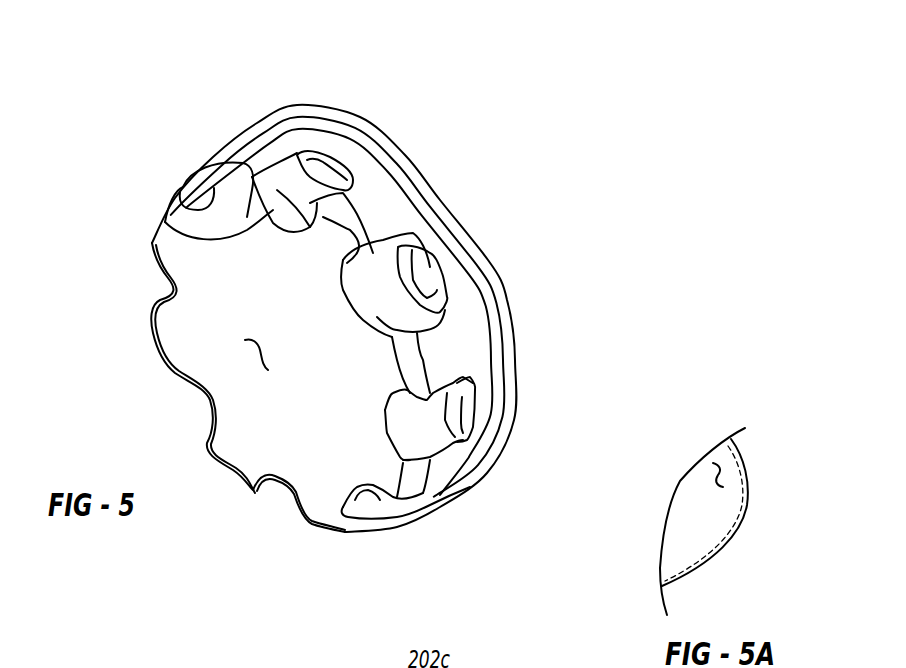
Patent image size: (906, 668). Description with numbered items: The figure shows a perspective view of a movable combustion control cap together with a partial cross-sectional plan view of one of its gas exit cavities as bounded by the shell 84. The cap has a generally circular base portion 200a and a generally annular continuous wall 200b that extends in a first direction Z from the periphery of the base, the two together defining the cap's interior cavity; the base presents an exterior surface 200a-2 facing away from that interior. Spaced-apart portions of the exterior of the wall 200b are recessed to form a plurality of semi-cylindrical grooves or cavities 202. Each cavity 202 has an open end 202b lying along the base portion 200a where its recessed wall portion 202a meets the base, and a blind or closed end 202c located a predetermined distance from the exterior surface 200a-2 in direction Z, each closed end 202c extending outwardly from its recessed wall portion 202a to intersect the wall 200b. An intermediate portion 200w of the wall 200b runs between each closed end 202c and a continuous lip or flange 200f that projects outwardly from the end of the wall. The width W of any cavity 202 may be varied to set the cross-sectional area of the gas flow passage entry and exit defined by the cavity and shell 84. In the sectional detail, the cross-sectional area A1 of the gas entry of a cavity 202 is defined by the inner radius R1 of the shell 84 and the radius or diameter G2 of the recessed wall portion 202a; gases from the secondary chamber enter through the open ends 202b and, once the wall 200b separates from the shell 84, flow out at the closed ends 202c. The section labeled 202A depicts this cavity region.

In FIG. 5, the first direction Z is at (283, 27).
In FIG. 5, the intermediate portion of wall 200w is at (380, 137).
In FIG. 5, the continuous wall 200b is at (387, 200).
In FIG. 5, the width of cavity W is at (400, 332).
In FIG. 5, the base portion 200a is at (267, 287).
In FIG. 5, the exterior surface of base portion 200a-2 is at (250, 357).
In FIG. 5, the open end of cavity 202b is at (217, 240).
In FIG. 5, the closed end of cavity 202c is at (330, 173).
In FIG. 5A, the closed end of cavity 202c is at (707, 472).
In FIG. 5, the cavities 202 is at (430, 422).
In FIG. 5, the recessed wall portion 202a is at (385, 280).
In FIG. 5, the flange 200f is at (510, 463).
In FIG. 5A, the lug cross section 202A is at (747, 500).
In FIG. 5A, the shell 84 is at (713, 465).
In FIG. 5A, the radius or diameter of recessed wall portion G2 is at (717, 540).
In FIG. 5A, the inner radius of shell R1 is at (695, 495).
In FIG. 5A, the cross-sectional area of open end A1 is at (683, 553).